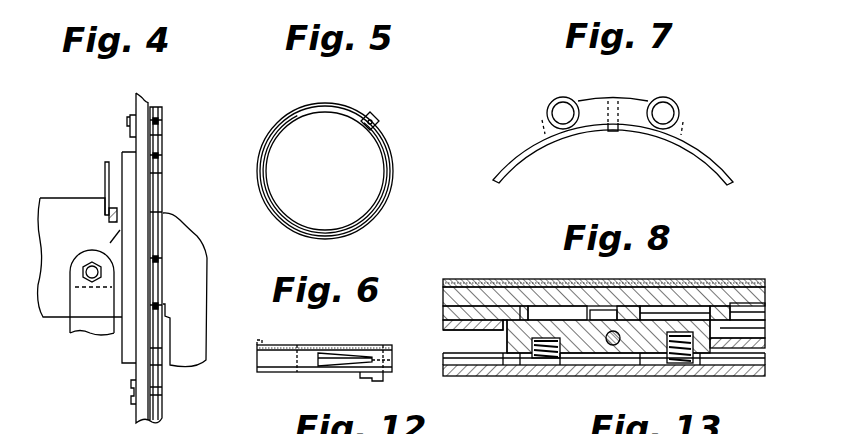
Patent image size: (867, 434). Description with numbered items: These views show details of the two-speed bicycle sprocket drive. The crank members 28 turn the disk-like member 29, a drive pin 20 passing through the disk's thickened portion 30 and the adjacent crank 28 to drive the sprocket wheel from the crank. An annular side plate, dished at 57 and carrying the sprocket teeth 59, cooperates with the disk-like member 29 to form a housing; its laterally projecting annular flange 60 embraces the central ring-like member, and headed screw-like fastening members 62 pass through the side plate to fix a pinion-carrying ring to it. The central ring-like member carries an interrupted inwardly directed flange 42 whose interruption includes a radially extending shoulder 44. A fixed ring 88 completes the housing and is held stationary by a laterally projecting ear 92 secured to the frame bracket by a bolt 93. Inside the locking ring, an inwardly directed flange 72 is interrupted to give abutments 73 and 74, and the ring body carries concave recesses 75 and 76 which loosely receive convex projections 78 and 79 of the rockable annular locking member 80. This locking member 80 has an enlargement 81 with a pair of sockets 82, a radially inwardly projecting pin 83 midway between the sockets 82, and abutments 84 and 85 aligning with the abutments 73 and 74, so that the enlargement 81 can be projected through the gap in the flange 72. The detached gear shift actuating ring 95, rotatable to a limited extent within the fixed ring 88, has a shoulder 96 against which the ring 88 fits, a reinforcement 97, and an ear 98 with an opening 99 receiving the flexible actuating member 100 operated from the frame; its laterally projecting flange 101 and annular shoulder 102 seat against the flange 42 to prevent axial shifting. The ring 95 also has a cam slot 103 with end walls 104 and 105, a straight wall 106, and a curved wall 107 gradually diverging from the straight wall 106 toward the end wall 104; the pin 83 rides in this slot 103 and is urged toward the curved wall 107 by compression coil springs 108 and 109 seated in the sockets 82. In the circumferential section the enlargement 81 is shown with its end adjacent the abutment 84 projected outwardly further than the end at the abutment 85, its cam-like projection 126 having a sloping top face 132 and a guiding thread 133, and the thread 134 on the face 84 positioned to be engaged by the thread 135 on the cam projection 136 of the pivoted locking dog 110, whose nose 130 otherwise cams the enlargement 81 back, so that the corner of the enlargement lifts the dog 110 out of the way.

In FIG. 4, the drive pin 20 is at (168, 313).
In FIG. 4, the crank member 28 is at (185, 348).
In FIG. 8, the disk-like member 29 is at (582, 318).
In FIG. 8, the thickened portion 30 is at (448, 293).
In FIG. 8, the inwardly directed flange 42 is at (445, 310).
In FIG. 8, the radially extending shoulder 44 is at (520, 308).
In FIG. 4, the dished portion 57 is at (143, 362).
In FIG. 4, the sprocket teeth 59 is at (160, 395).
In FIG. 4, the annular flange 60 is at (128, 335).
In FIG. 4, the headed screw-like member 62 is at (130, 118).
In FIG. 8, the inwardly directed flange 72 is at (446, 328).
In FIG. 8, the abutment 73 is at (745, 338).
In FIG. 8, the abutment 74 is at (505, 335).
In FIG. 8, the concave recess 75 is at (712, 362).
In FIG. 8, the concave recess 76 is at (528, 372).
In FIG. 7, the convex projection 78 is at (555, 100).
In FIG. 7, the convex projection 79 is at (658, 98).
In FIG. 7, the rockable annular locking member 80 is at (715, 158).
In FIG. 8, the rockable annular locking member 80 is at (453, 376).
In FIG. 7, the enlargement 81 is at (545, 118).
In FIG. 8, the enlargement 81 is at (583, 348).
In FIG. 7, the socket 82 is at (563, 124).
In FIG. 8, the socket 82 is at (668, 365).
In FIG. 7, the pin 83 is at (613, 132).
In FIG. 8, the pin 83 is at (614, 347).
In FIG. 8, the abutment 84 is at (717, 332).
In FIG. 8, the abutment 85 is at (513, 373).
In FIG. 8, the fixed ring 88 is at (472, 378).
In FIG. 4, the ear 92 is at (110, 243).
In FIG. 4, the bolt 93 is at (92, 272).
In FIG. 5, the gear shift actuating member 95 is at (383, 181).
In FIG. 6, the gear shift actuating member 95 is at (357, 348).
In FIG. 5, the shoulder 96 is at (393, 176).
In FIG. 6, the shoulder 96 is at (282, 370).
In FIG. 5, the reinforcement 97 is at (345, 118).
In FIG. 4, the ear 98 is at (112, 215).
In FIG. 5, the ear 98 is at (380, 122).
In FIG. 6, the ear 98 is at (378, 379).
In FIG. 5, the opening 99 is at (372, 121).
In FIG. 4, the flexible actuating member 100 is at (105, 167).
In FIG. 6, the laterally projecting flange 101 is at (277, 347).
In FIG. 6, the annular shoulder 102 is at (257, 348).
In FIG. 6, the cam slot 103 is at (348, 365).
In FIG. 6, the end wall 104 is at (312, 358).
In FIG. 6, the end wall 105 is at (392, 361).
In FIG. 6, the straight wall 106 is at (325, 362).
In FIG. 6, the curved wall 107 is at (330, 352).
In FIG. 8, the compression coil spring 108 is at (700, 360).
In FIG. 8, the compression coil spring 109 is at (548, 360).
In FIG. 8, the locking dog 110 is at (685, 285).
In FIG. 8, the cam-like projection 126 is at (615, 313).
In FIG. 8, the nose 130 is at (580, 312).
In FIG. 8, the sloping top face 132 is at (670, 312).
In FIG. 8, the thread 133 is at (628, 284).
In FIG. 8, the thread 134 is at (715, 305).
In FIG. 8, the thread 135 is at (740, 282).
In FIG. 8, the cam projection 136 is at (750, 310).